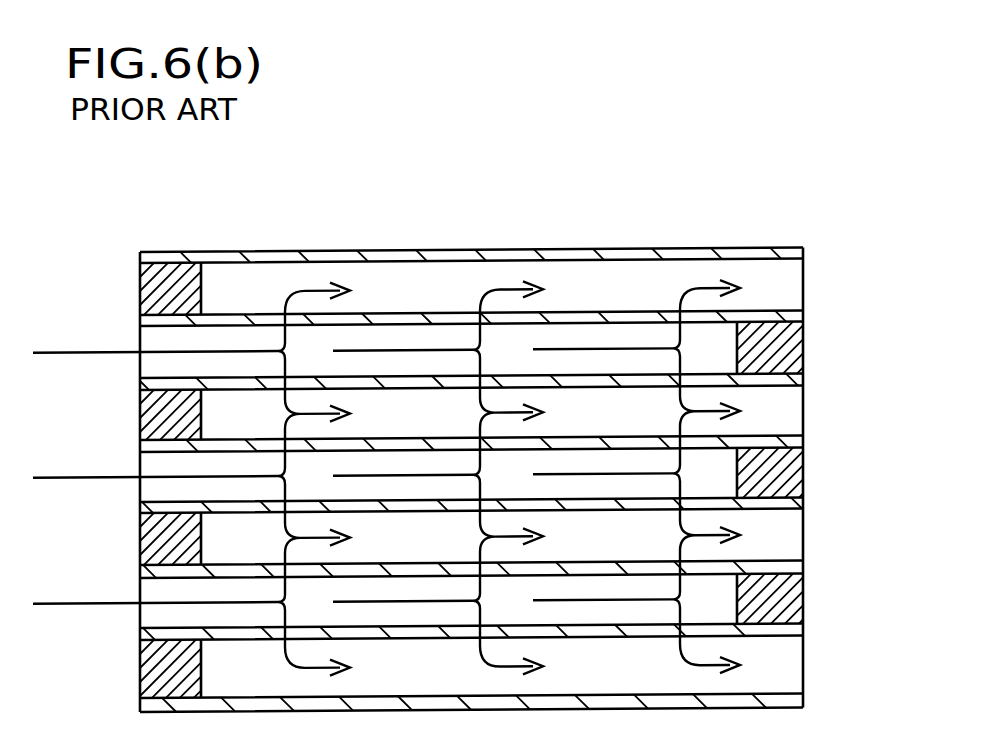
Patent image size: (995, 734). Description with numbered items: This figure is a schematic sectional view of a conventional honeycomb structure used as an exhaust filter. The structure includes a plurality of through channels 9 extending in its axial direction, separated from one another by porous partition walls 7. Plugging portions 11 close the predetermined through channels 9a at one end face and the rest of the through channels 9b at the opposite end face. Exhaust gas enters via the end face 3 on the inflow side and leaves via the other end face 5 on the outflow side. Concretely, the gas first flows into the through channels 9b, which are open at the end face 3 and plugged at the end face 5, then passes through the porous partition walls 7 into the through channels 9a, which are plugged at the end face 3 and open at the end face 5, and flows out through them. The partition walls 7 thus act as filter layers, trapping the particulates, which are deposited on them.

The end face 3 is at (140, 493).
The other end face 5 is at (803, 532).
The porous partition walls 7 is at (572, 320).
The through channels 9 is at (386, 400).
The predetermined through channels 9a is at (383, 290).
The rest of the through channels 9b is at (455, 347).
The plugging portions 11 is at (793, 338).